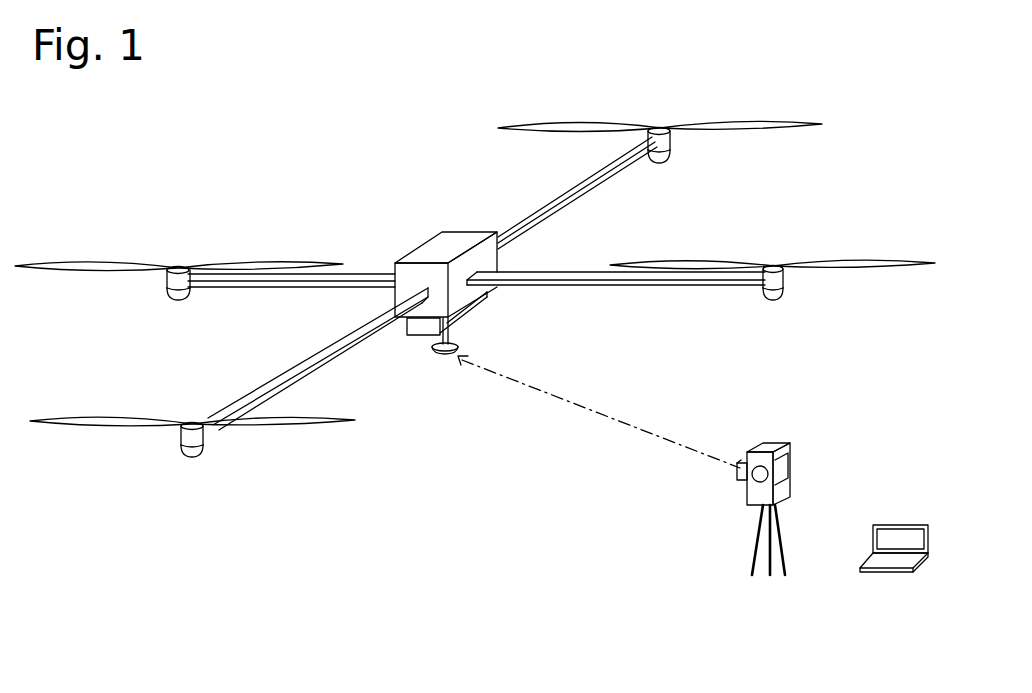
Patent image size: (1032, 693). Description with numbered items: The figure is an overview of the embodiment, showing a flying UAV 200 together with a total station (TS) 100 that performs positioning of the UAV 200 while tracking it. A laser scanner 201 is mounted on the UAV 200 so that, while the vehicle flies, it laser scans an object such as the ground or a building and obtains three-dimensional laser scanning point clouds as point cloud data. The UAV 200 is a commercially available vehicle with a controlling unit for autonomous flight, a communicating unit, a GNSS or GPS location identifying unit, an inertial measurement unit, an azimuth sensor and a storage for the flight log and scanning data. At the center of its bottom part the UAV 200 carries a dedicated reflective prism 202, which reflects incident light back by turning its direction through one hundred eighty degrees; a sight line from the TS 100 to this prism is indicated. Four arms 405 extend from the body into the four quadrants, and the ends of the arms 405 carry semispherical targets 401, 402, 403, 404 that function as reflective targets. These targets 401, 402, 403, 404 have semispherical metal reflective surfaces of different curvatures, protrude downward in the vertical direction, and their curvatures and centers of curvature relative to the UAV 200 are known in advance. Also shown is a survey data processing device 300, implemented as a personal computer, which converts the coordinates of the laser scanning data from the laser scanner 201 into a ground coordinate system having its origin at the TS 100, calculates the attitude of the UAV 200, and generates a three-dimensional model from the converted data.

The total station (TS) 100 is at (863, 490).
The UAV 200 is at (435, 249).
The laser scanner 201 is at (468, 312).
The reflective prism 202 is at (443, 356).
The survey data processing device 300 is at (883, 560).
The target 401 is at (778, 300).
The target 402 is at (670, 150).
The target 403 is at (177, 300).
The target 404 is at (193, 457).
The arm 405 is at (543, 207).